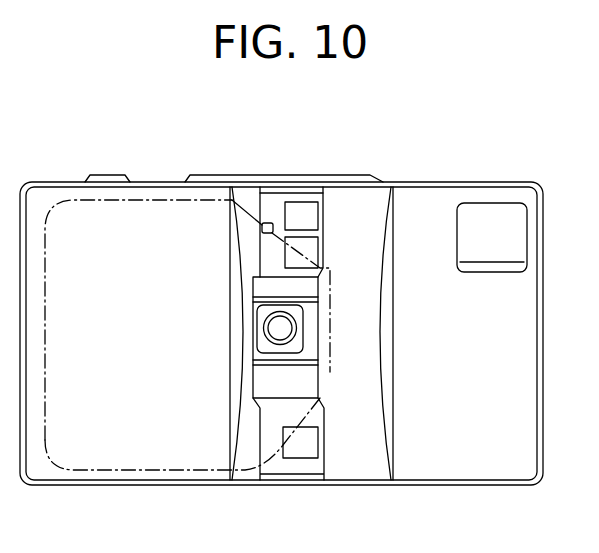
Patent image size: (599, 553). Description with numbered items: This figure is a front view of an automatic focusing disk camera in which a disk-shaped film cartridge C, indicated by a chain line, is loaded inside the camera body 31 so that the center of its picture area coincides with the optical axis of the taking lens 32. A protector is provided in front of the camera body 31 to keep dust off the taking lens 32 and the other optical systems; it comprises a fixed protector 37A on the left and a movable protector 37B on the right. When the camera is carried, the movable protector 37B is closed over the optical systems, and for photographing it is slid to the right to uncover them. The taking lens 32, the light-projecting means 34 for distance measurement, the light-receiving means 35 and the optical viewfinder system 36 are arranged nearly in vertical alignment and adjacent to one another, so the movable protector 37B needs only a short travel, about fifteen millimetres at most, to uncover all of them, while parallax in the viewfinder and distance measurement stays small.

The camera body 31 is at (60, 487).
The disk-shaped film cartridge C is at (143, 452).
The fixed protector 37A is at (246, 192).
The movable protector 37B is at (433, 207).
The optical viewfinder system 36 is at (298, 210).
The light-projecting means 34 is at (313, 250).
The taking lens 32 is at (287, 325).
The light-receiving means 35 is at (303, 447).